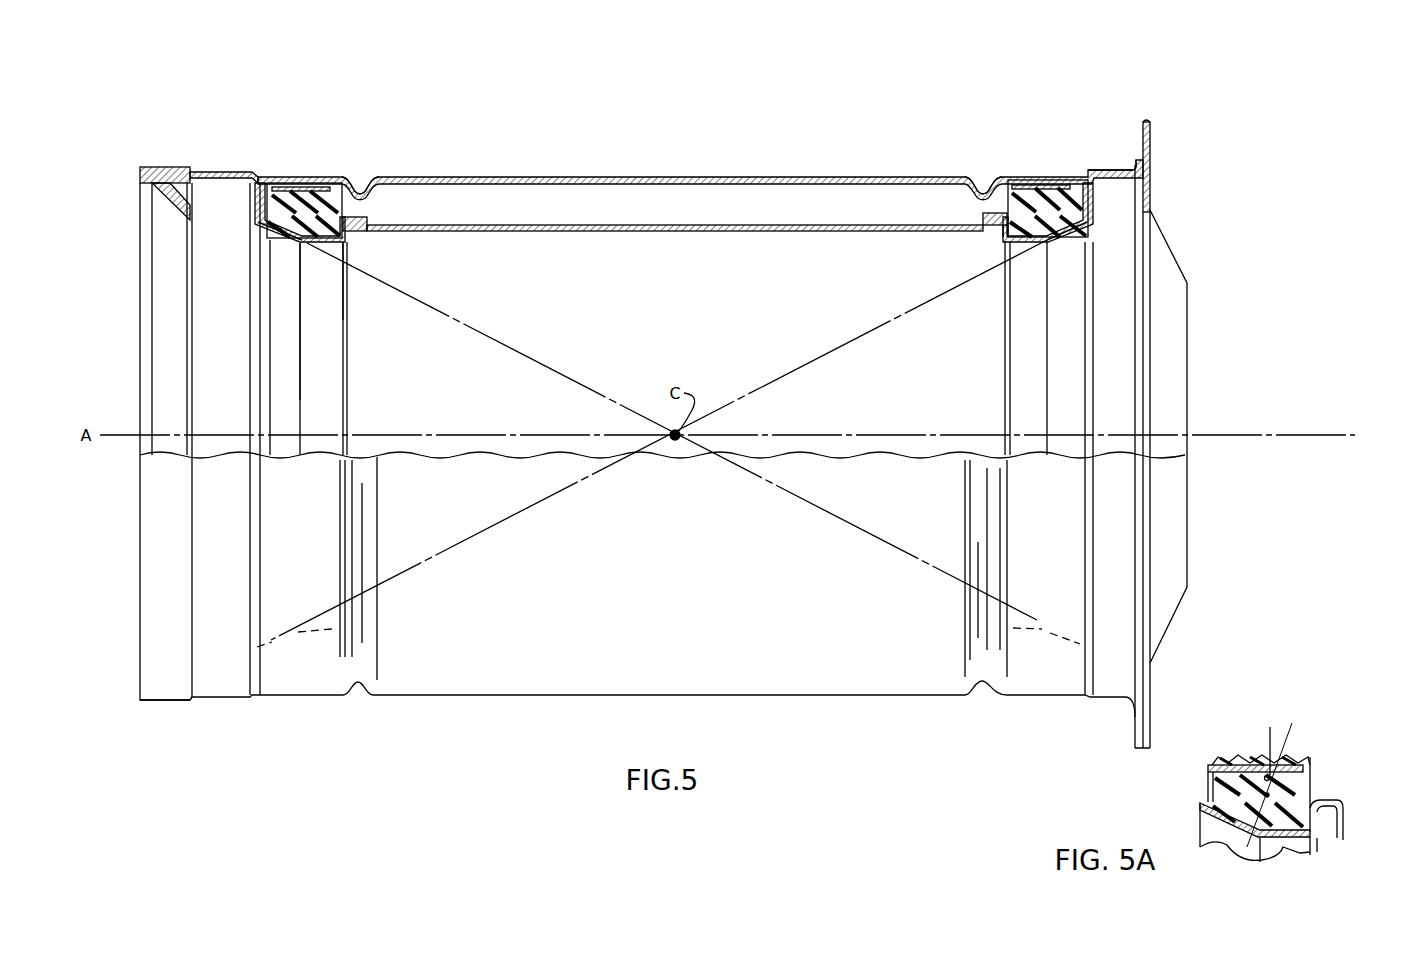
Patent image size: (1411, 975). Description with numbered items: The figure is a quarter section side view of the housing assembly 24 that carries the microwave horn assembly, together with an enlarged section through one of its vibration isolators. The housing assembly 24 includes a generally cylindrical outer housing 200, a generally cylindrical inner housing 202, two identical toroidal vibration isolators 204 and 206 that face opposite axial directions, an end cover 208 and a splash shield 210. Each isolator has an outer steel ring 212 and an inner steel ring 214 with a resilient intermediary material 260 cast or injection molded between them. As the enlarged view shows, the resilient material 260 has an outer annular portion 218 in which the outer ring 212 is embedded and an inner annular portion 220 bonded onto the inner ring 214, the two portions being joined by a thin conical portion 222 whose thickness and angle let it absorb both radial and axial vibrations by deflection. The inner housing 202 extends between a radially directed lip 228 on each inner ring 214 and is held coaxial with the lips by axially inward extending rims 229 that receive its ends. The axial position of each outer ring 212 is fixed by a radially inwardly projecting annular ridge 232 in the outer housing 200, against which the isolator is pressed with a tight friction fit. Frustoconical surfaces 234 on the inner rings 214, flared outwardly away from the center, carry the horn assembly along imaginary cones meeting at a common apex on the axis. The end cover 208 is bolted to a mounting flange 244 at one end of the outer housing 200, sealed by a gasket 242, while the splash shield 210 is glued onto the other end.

In FIG. 5, the housing assembly 24 is at (673, 147).
In FIG. 5, the outer housing 200 is at (792, 177).
In FIG. 5, the inner housing 202 is at (684, 232).
In FIG. 5, the vibration isolator 204 is at (322, 272).
In FIG. 5, the vibration isolator 206 is at (983, 247).
In FIG. 5, the end cover 208 is at (1182, 268).
In FIG. 5, the splash shield 210 is at (180, 200).
In FIG. 5, the outer steel ring 212 is at (287, 185).
In FIG. 5A, the outer steel ring 212 is at (1236, 758).
In FIG. 5, the inner steel ring 214 is at (320, 250).
In FIG. 5A, the inner steel ring 214 is at (1283, 847).
In FIG. 5A, the outer annular portion 218 is at (1310, 765).
In FIG. 5A, the inner annular portion 220 is at (1233, 803).
In FIG. 5, the conical portion 222 is at (388, 222).
In FIG. 5A, the conical portion 222 is at (1273, 788).
In FIG. 5, the radially directed lip 228 is at (348, 238).
In FIG. 5A, the radially directed lip 228 is at (1316, 816).
In FIG. 5, the rim 229 is at (350, 224).
In FIG. 5A, the rim 229 is at (1343, 822).
In FIG. 5, the annular ridge 232 is at (978, 190).
In FIG. 5, the frustoconical surface 234 is at (287, 230).
In FIG. 5A, the frustoconical surface 234 is at (1237, 810).
In FIG. 5, the gasket 242 is at (1152, 122).
In FIG. 5, the mounting flange 244 is at (1134, 160).
In FIG. 5, the resilient intermediary material 260 is at (370, 198).
In FIG. 5A, the resilient intermediary material 260 is at (1192, 785).